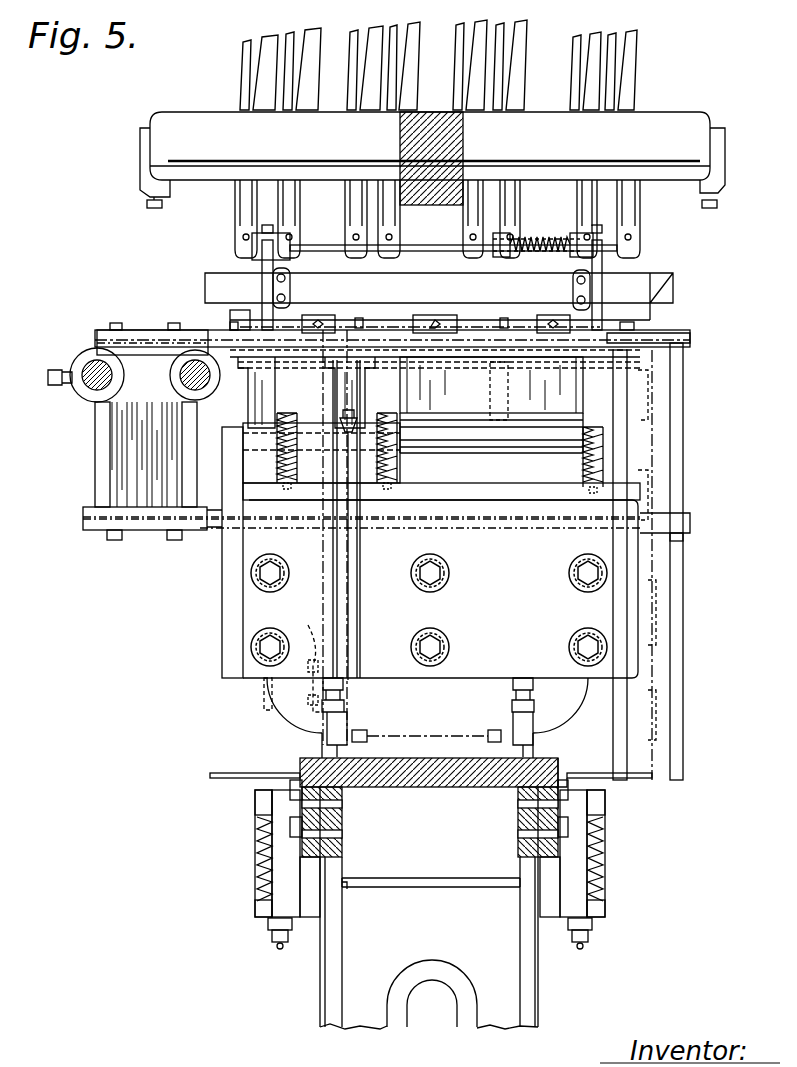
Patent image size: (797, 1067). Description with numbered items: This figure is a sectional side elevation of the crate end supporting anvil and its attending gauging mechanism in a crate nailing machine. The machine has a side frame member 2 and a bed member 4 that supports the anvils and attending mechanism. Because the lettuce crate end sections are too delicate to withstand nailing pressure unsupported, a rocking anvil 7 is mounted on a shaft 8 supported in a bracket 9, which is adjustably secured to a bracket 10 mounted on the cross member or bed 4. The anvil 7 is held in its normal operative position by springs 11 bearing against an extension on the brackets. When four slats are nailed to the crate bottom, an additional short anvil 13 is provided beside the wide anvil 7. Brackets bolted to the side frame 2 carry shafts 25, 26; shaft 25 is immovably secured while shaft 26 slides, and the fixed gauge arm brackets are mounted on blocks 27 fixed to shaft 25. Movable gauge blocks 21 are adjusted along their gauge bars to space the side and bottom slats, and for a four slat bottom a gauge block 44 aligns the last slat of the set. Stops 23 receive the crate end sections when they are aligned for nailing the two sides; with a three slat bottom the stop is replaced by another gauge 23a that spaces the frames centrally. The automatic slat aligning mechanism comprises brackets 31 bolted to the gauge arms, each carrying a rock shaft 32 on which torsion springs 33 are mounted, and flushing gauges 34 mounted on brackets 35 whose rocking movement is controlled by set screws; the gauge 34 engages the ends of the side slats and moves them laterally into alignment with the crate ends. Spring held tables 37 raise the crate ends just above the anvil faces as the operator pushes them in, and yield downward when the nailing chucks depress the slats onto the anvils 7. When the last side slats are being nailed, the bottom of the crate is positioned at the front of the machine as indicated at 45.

The side frame member 2 is at (507, 992).
The bed member 4 is at (558, 848).
The rocking anvil 7 is at (491, 388).
The shaft 8 is at (480, 455).
The bracket 9 is at (361, 552).
The bracket 10 is at (427, 718).
The spring 11 is at (400, 468).
The short anvil 13 is at (306, 392).
The gauge block 21 is at (330, 315).
The stop 23 is at (307, 658).
The gauge 23a is at (264, 700).
The shaft 25 is at (96, 403).
The shaft 26 is at (200, 398).
The block 27 is at (90, 400).
The bracket 31 is at (263, 266).
The rock shaft 32 is at (440, 221).
The torsion spring 33 is at (540, 240).
The flushing gauge 34 is at (439, 301).
The bracket 35 is at (290, 278).
The spring held table 37 is at (272, 750).
The gauge block 44 is at (197, 330).
The crate bottom position 45 is at (653, 388).